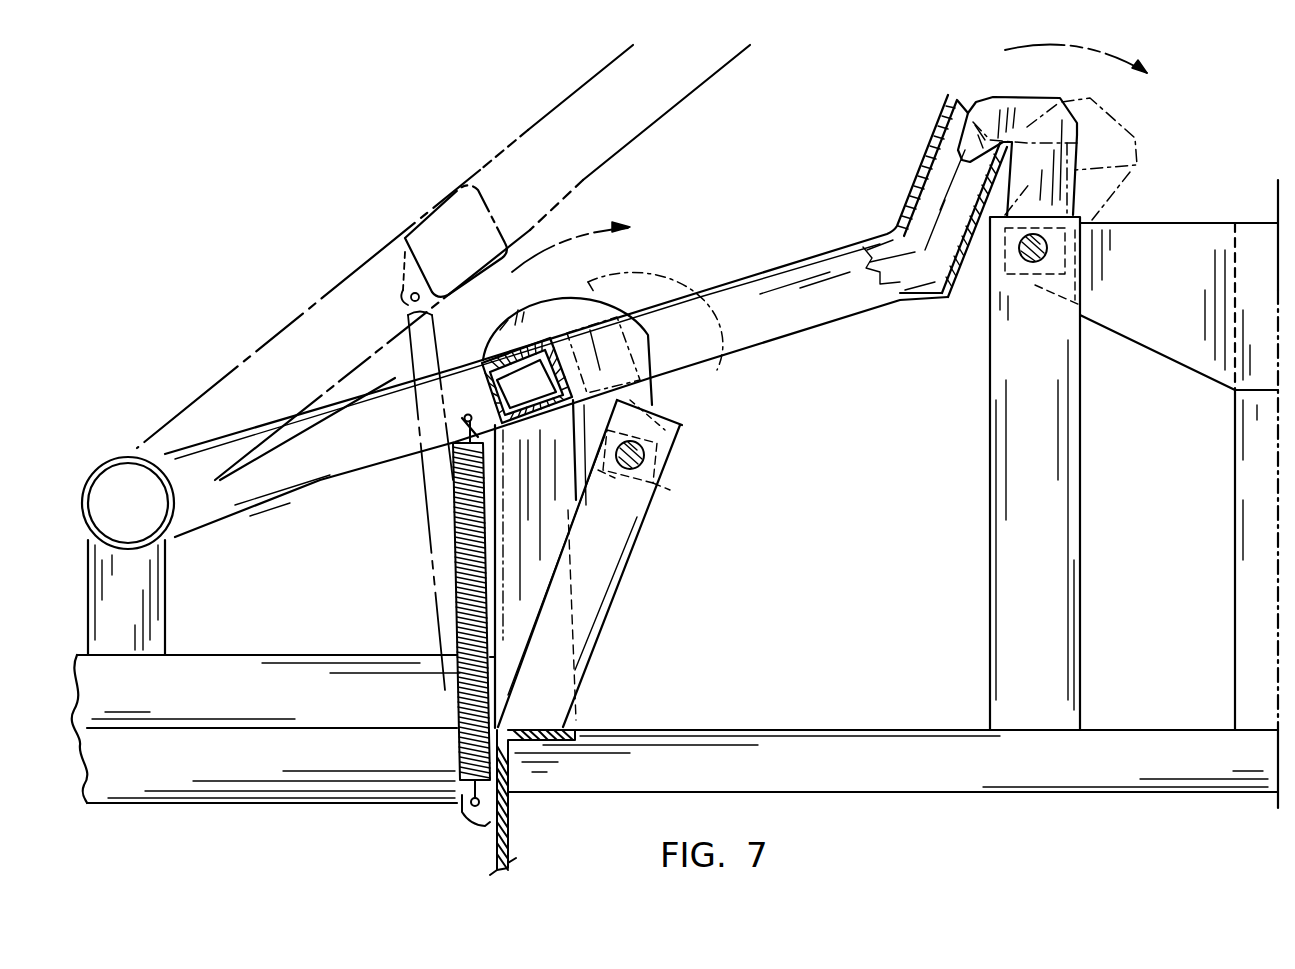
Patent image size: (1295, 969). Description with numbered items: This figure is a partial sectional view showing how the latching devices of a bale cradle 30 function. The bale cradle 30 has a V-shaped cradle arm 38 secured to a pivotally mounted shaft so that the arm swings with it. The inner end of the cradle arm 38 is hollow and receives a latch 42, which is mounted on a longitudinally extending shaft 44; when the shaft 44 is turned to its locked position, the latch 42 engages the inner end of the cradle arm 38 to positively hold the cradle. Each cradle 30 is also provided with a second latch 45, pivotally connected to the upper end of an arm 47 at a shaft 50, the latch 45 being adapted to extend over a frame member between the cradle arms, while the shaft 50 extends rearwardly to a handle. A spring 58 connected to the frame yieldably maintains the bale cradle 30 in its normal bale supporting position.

The bale cradle 30 is at (798, 232).
The cradle arm 38 is at (795, 317).
The latch 42 is at (1078, 174).
The longitudinally extending shaft 44 is at (1027, 253).
The latch 45 is at (630, 357).
The arm 47 is at (592, 598).
The shaft 50 is at (640, 463).
The spring 58 is at (457, 560).